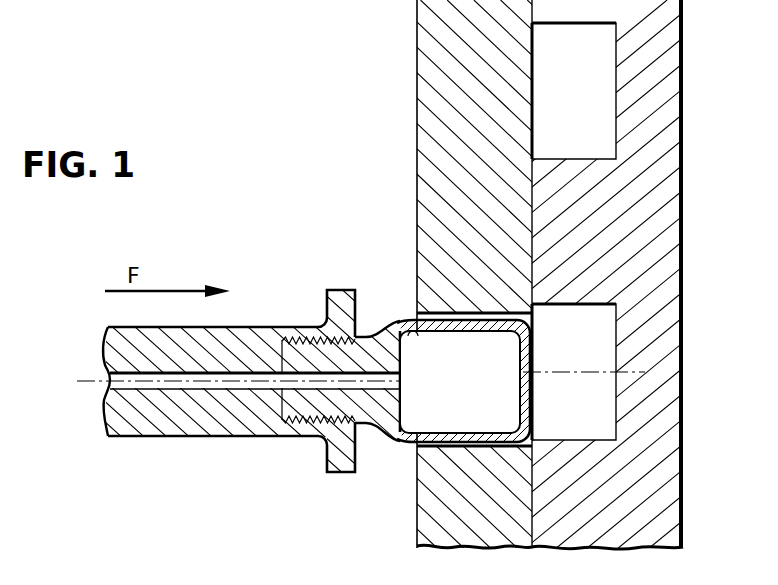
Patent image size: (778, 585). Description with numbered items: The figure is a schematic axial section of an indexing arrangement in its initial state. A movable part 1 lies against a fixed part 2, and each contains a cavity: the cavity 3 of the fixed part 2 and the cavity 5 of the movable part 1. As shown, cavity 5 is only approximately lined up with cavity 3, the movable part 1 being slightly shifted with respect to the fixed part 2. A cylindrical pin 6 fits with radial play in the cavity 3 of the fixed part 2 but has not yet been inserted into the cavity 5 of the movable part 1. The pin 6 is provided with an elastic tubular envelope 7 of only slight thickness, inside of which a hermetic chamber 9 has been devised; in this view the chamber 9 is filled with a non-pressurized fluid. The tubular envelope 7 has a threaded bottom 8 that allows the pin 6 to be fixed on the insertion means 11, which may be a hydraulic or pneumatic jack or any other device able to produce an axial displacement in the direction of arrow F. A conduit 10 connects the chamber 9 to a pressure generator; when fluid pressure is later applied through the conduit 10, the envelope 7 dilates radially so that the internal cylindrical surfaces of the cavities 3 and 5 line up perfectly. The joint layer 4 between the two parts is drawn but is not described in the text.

The movable part 1 is at (683, 28).
The fixed part 2 is at (417, 50).
The cavity of the fixed part 3 is at (465, 390).
The joint layer between walls 4 is at (535, 222).
The cavity of the movable part 5 is at (616, 103).
The cylindrical pin 6 is at (281, 310).
The elastic tubular envelope 7 is at (392, 327).
The threaded bottom 8 is at (295, 410).
The hermetic chamber 9 is at (424, 335).
The conduit 10 is at (120, 386).
The insertion means 11 is at (114, 351).